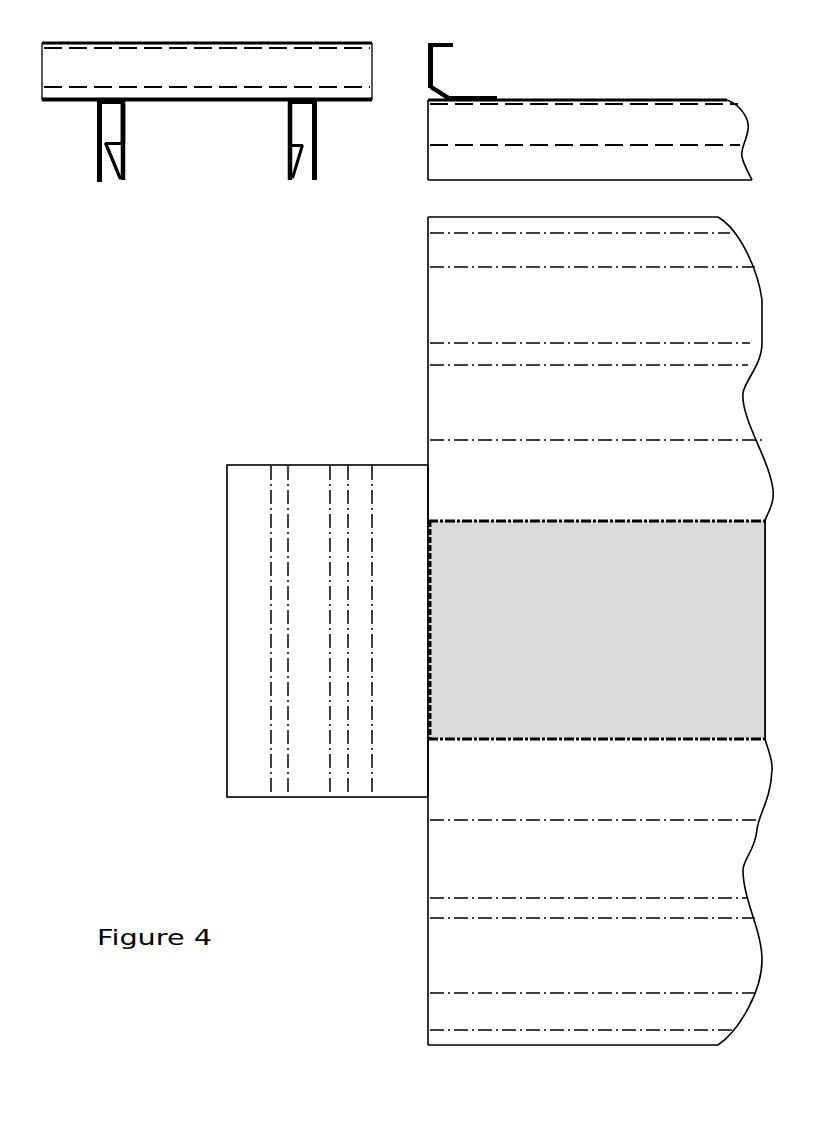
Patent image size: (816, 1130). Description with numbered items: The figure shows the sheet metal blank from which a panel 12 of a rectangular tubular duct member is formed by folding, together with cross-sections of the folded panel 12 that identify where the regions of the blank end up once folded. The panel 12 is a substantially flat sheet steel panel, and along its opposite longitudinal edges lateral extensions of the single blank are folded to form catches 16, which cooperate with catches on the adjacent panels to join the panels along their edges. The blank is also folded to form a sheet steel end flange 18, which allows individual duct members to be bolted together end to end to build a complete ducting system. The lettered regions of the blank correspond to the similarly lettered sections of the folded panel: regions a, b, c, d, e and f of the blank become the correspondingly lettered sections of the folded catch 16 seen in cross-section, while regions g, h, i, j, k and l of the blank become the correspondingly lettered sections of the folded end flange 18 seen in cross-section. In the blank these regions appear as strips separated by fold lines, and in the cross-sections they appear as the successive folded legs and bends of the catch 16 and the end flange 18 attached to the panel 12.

The panel 12 is at (228, 102).
The catch 16 is at (93, 188).
The end flange 18 is at (342, 77).
The lettered region a is at (98, 143).
The lettered region b is at (102, 165).
The lettered region c is at (112, 98).
The lettered region d is at (125, 125).
The lettered region e is at (113, 155).
The lettered region f is at (118, 147).
The lettered region g is at (428, 77).
The lettered region h is at (438, 43).
The lettered region i is at (452, 47).
The lettered region j is at (439, 72).
The lettered region k is at (448, 92).
The lettered region l is at (497, 97).